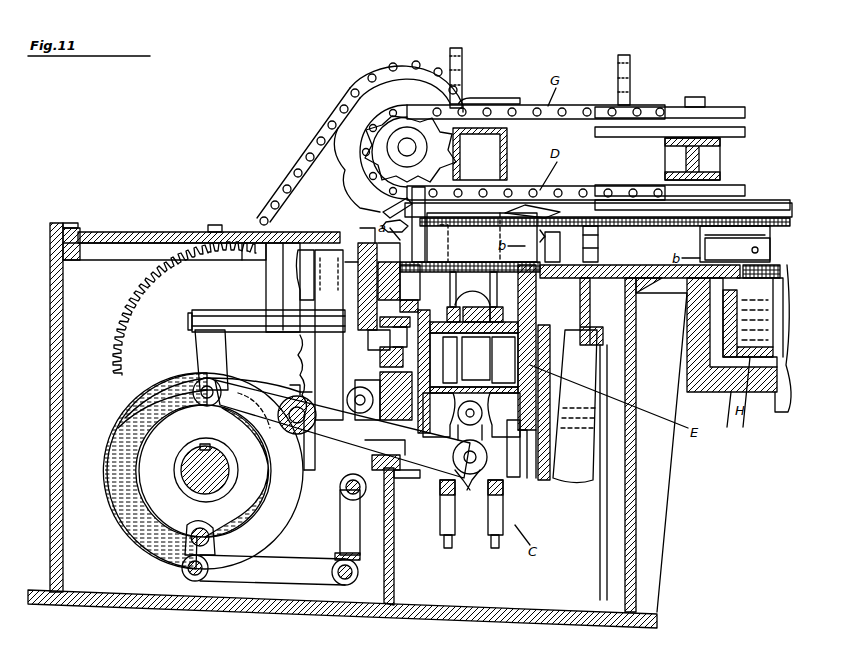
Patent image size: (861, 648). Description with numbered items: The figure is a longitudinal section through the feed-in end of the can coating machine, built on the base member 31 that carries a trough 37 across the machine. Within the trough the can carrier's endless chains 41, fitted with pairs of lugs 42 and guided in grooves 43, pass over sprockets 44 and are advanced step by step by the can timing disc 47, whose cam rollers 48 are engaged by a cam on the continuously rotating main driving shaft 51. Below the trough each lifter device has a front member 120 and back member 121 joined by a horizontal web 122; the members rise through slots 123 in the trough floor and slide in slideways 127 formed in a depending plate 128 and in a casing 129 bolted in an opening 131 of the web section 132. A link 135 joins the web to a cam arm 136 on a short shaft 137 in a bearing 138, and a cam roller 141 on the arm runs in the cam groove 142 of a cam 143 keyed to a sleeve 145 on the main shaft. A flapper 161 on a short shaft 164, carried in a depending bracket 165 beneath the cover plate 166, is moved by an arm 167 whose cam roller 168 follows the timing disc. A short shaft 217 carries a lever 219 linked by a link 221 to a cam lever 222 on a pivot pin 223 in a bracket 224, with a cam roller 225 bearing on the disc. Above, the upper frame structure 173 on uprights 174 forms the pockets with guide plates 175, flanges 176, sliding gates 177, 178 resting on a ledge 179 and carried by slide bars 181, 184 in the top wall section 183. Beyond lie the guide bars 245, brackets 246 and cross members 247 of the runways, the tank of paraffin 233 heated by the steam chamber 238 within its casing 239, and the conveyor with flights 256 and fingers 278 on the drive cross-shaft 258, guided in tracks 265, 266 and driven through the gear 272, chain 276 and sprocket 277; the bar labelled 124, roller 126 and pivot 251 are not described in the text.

The base member 31 is at (50, 358).
The trough 37 is at (474, 350).
The endless chains 41 is at (442, 500).
The lugs 42 is at (458, 276).
The grooves 43 is at (472, 299).
The sprockets 44 is at (466, 490).
The can timing disc 47 is at (315, 350).
The cam rollers 48 is at (329, 335).
The main driving shaft 51 is at (188, 462).
The front member 120 is at (439, 415).
The back member 121 is at (506, 435).
The connecting horizontal web 122 is at (474, 360).
The slots 123 is at (405, 320).
The guide 124 is at (406, 288).
The roller 126 is at (348, 396).
The slideways 127 is at (425, 372).
The depending plate 128 is at (560, 445).
The casing 129 is at (368, 340).
The opening 131 is at (398, 470).
The web section 132 is at (394, 576).
The link 135 is at (452, 456).
The cam arm 136 is at (342, 429).
The short shaft 137 is at (275, 425).
The bearing 138 is at (290, 397).
The cam roller 141 is at (198, 382).
The cam groove 142 is at (140, 395).
The cam 143 is at (122, 418).
The sleeve 145 is at (178, 477).
The flapper 161 is at (211, 360).
The short shaft 164 is at (188, 318).
The depending bracket 165 is at (245, 272).
The cover plate 166 is at (146, 236).
The arm 167 is at (300, 250).
The cam roller 168 is at (324, 250).
The upper frame structure 173 is at (507, 138).
The uprights 174 is at (490, 208).
The can guide plates 175 is at (598, 238).
The top right-angle flanges 176 is at (482, 237).
The gate 177 is at (460, 243).
The gate 178 is at (432, 224).
The ledge 179 is at (391, 270).
The slide bar 181 is at (548, 246).
The top wall section 183 is at (570, 437).
The slide bar 184 is at (581, 439).
The short shaft 217 is at (198, 530).
The lever 219 is at (216, 540).
The link 221 is at (270, 570).
The cam lever 222 is at (348, 544).
The pivot pin 223 is at (352, 498).
The bracket 224 is at (390, 520).
The cam roller 225 is at (378, 382).
The liquid paraffin 233 is at (739, 338).
The steam chamber 238 is at (727, 422).
The heat insulated casing 239 is at (761, 400).
The guide bars 245 is at (710, 238).
The brackets 246 is at (756, 262).
The cross members 247 is at (720, 156).
The chain loop 251 is at (383, 160).
The ring-like flights 256 is at (462, 53).
The drive cross-shaft 258 is at (407, 146).
The track 265 is at (746, 190).
The track 266 is at (745, 112).
The gear 272 is at (135, 290).
The endless chain 276 is at (312, 140).
The sprocket 277 is at (372, 95).
The finger 278 is at (490, 100).